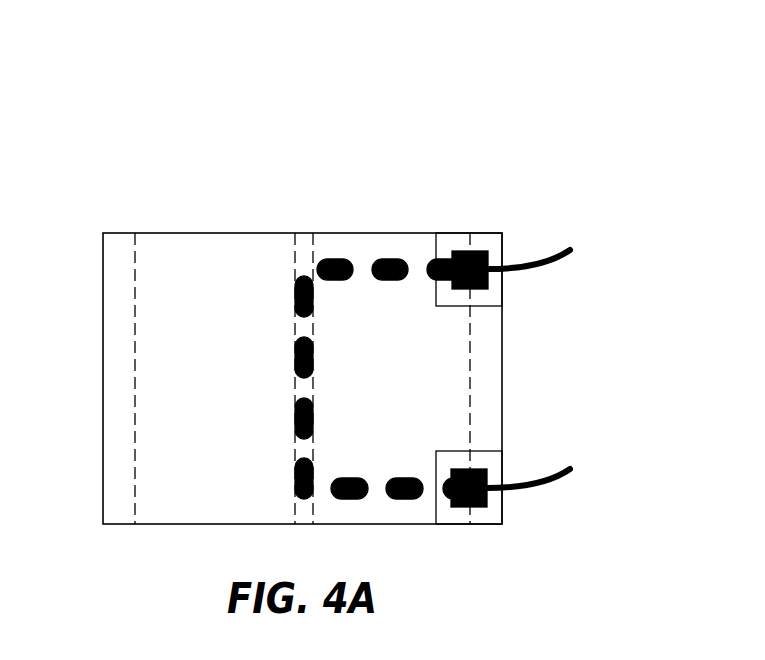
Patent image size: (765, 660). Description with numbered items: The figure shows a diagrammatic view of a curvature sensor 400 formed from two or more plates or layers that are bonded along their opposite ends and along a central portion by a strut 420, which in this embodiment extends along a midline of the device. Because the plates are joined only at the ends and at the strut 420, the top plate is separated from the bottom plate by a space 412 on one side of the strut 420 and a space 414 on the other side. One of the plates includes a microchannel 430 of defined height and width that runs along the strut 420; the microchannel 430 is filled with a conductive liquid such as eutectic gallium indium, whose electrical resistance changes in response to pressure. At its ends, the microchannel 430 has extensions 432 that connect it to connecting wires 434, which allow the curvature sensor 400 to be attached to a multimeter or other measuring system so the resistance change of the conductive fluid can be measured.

The curvature sensor 400 is at (178, 97).
The space 412 is at (177, 233).
The strut 420 is at (303, 233).
The space 414 is at (430, 233).
The microchannel 430 is at (295, 368).
The extensions 432 is at (387, 259).
The connecting wires 434 is at (537, 258).